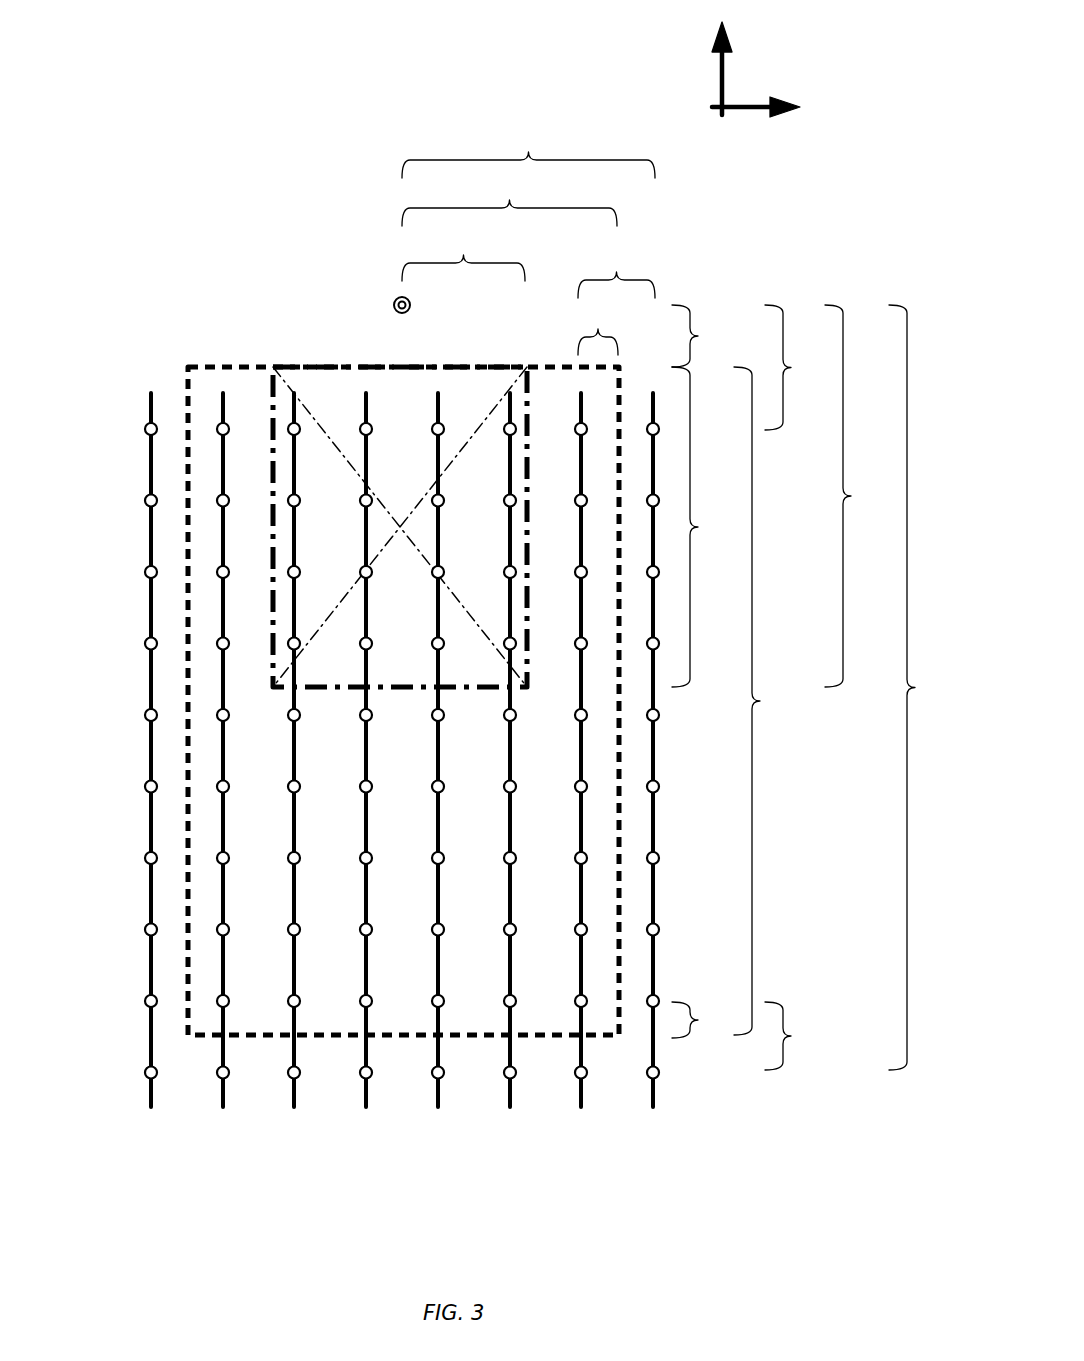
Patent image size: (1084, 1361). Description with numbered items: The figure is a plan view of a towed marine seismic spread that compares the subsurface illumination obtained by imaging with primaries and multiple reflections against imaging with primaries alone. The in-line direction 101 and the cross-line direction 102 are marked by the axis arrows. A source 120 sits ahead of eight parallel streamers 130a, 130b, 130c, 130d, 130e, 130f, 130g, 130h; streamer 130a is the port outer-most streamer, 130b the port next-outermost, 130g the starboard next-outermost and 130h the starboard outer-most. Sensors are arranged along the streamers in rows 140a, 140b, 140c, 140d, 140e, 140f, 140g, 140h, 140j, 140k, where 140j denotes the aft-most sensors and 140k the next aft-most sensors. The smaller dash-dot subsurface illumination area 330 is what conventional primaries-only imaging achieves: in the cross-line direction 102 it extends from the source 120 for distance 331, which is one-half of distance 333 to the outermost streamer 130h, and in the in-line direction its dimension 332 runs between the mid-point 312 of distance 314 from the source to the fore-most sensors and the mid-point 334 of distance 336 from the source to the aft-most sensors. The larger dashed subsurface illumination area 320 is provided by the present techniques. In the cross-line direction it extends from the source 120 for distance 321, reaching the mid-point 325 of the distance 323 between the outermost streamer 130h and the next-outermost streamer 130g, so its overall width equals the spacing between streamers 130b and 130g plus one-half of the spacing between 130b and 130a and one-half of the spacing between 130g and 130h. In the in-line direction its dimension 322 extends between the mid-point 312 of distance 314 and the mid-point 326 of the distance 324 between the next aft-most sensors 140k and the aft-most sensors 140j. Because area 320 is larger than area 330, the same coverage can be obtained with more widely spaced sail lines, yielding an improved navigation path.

The first direction (vertical axis) 101 is at (725, 57).
The cross-line direction 102 is at (777, 108).
The source 120 is at (395, 297).
The port outer-most streamer 130a is at (149, 1100).
The port next-outermost streamer 130b is at (221, 1090).
The sense electrode line 130c is at (292, 1103).
The sense electrode line 130d is at (364, 1095).
The sense electrode line 130e is at (436, 1102).
The sense electrode line 130f is at (508, 1095).
The starboard next-outermost streamer 130g is at (579, 1100).
The starboard outer-most streamer 130h is at (651, 1098).
The drive electrode row / node row 140a is at (146, 424).
The drive electrode row / node row 140b is at (146, 496).
The drive electrode row / node row 140c is at (146, 567).
The drive electrode row / node row 140d is at (146, 638).
The drive electrode row / node row 140e is at (146, 710).
The drive electrode row / node row 140f is at (146, 782).
The drive electrode row / node row 140g is at (146, 853).
The drive electrode row / node row 140h is at (146, 924).
The aft-most sensors 140j is at (146, 996).
The next aft-most sensors 140k is at (146, 1068).
The subsurface illumination area 320 is at (186, 390).
The subsurface illumination area 330 is at (271, 410).
The mid-point 312 is at (708, 336).
The distance 314 is at (801, 367).
The distance 321 is at (509, 199).
The vertical height of region 322 is at (770, 701).
The distance 323 is at (616, 273).
The distance 324 is at (801, 1036).
The mid-point 325 is at (598, 329).
The mid-point 326 is at (707, 1020).
The distance 331 is at (463, 256).
The distance 332 is at (708, 527).
The distance 333 is at (528, 151).
The mid-point 334 is at (861, 496).
The distance 336 is at (924, 687).